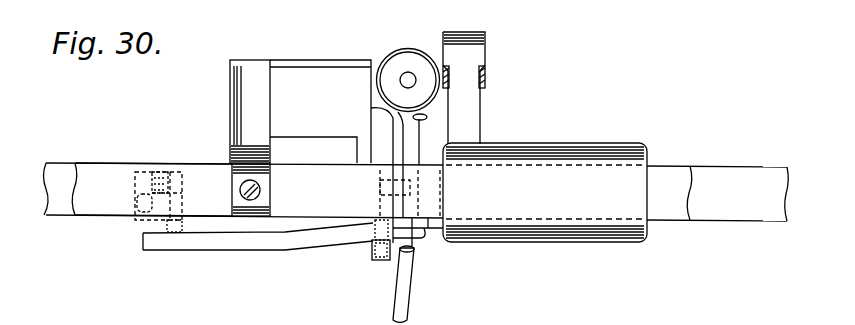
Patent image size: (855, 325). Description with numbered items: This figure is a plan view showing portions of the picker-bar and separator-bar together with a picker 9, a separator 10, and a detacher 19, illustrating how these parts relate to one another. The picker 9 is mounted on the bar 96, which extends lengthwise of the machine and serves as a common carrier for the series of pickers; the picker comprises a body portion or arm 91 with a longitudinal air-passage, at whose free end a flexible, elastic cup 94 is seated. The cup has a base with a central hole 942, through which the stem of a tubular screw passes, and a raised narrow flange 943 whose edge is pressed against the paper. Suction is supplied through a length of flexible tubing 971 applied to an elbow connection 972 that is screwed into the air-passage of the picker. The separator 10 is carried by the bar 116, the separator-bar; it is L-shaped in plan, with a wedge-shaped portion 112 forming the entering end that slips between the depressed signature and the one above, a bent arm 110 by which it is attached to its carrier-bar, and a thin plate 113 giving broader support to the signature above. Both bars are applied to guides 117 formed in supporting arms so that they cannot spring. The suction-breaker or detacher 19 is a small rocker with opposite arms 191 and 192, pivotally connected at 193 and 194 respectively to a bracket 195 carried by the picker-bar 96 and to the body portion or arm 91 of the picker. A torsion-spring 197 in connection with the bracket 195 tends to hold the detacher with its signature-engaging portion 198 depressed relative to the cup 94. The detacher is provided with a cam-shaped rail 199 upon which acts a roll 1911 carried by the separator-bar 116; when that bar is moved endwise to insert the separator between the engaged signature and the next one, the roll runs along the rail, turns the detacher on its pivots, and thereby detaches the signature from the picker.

The picker 9 is at (430, 230).
The separator 10 is at (273, 46).
The suction-breaker or detacher 19 is at (270, 257).
The body portion or arm 91 is at (417, 137).
The cup 94 is at (503, 61).
The bar 96 is at (746, 177).
The bent arm 110 is at (268, 188).
The wedge-shaped portion 112 is at (227, 89).
The thin plate 113 is at (313, 82).
The bar 116 is at (91, 162).
The guides 117 is at (562, 143).
The arm 191 is at (172, 209).
The arm 192 is at (383, 207).
The pivotal connection 193 is at (190, 174).
The pivotal connection 194 is at (375, 182).
The bracket 195 is at (135, 184).
The torsion-spring 197 is at (161, 171).
The signature-engaging portion 198 is at (417, 118).
The cam-shaped rail 199 is at (294, 244).
The central hole 942 is at (417, 80).
The raised narrow flange 943 is at (429, 53).
The flexible tubing 971 is at (396, 293).
The elbow connection 972 is at (414, 256).
The roll 1911 is at (370, 248).